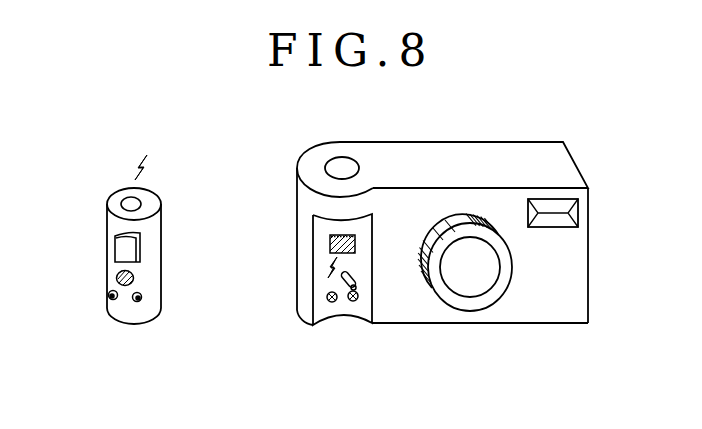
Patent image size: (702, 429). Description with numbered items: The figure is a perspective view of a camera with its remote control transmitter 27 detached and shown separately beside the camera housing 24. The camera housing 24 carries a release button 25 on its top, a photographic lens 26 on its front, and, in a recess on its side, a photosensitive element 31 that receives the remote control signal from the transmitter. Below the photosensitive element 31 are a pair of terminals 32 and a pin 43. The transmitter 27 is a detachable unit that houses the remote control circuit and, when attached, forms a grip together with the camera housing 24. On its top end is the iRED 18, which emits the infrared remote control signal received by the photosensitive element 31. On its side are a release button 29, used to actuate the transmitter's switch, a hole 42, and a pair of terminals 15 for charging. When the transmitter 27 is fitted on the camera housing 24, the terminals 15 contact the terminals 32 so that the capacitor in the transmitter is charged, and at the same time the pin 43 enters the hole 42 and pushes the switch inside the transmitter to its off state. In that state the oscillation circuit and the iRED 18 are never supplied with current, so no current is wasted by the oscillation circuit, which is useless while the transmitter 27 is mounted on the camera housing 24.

The terminals for charging 15 is at (137, 302).
The iRED 18 is at (137, 202).
The camera housing 24 is at (573, 162).
The release button 25 is at (346, 158).
The photographic lens 26 is at (472, 311).
The transmitter 27 is at (161, 247).
The release button 29 is at (122, 252).
The photosensitive element 31 is at (328, 245).
The terminals 32 is at (353, 302).
The hole 42 is at (132, 278).
The pin 43 is at (342, 279).